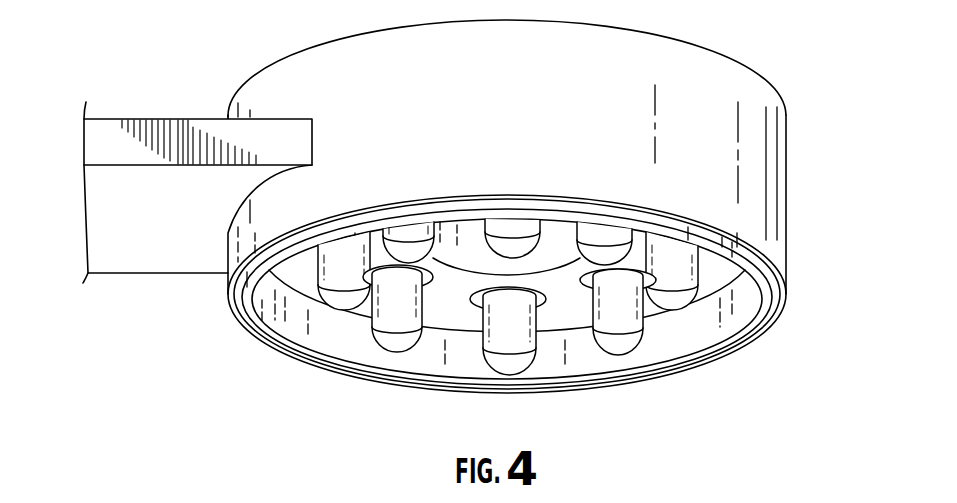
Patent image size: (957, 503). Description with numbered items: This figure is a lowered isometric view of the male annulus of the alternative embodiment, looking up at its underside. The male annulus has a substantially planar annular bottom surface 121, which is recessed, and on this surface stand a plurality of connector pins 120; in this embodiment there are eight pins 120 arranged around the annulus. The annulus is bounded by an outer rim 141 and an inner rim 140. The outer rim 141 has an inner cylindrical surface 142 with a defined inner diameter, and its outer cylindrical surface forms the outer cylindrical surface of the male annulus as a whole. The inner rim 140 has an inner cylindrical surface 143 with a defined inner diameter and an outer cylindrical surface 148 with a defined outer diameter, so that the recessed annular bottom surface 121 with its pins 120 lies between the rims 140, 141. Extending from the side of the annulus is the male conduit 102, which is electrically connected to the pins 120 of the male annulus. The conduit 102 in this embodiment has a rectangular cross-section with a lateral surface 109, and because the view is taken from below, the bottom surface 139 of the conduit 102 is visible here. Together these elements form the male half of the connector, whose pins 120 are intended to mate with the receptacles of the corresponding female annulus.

The male conduit 102 is at (117, 82).
The lateral surface 109 is at (170, 131).
The bottom surface 139 is at (118, 243).
The connector pins 120 is at (348, 300).
The annular bottom surface 121 is at (455, 317).
The inner rim 140 is at (672, 370).
The outer rim 141 is at (777, 322).
The inner cylindrical surface 142 is at (768, 298).
The inner cylindrical surface 143 is at (283, 307).
The outer cylindrical surface 148 is at (738, 258).